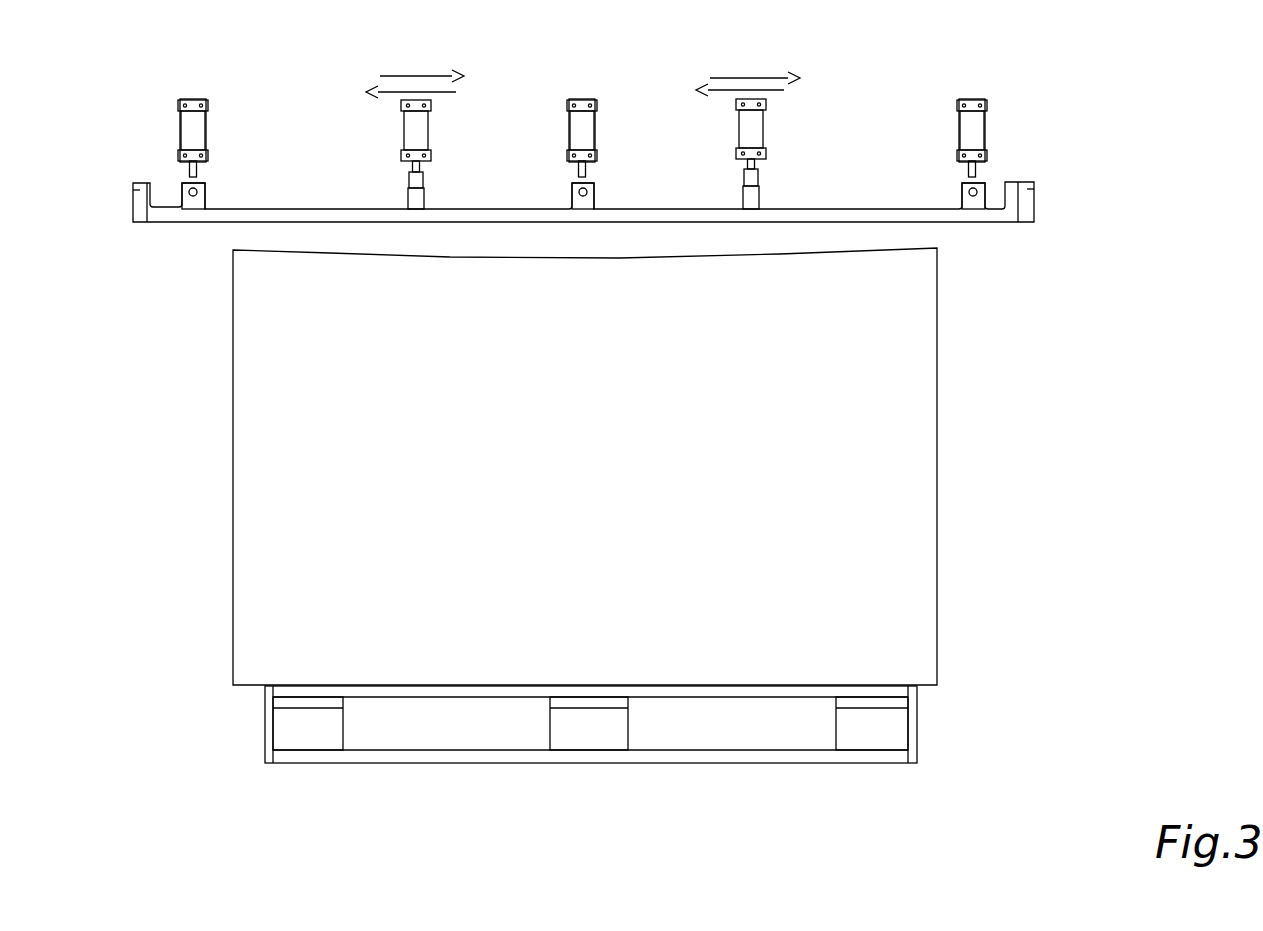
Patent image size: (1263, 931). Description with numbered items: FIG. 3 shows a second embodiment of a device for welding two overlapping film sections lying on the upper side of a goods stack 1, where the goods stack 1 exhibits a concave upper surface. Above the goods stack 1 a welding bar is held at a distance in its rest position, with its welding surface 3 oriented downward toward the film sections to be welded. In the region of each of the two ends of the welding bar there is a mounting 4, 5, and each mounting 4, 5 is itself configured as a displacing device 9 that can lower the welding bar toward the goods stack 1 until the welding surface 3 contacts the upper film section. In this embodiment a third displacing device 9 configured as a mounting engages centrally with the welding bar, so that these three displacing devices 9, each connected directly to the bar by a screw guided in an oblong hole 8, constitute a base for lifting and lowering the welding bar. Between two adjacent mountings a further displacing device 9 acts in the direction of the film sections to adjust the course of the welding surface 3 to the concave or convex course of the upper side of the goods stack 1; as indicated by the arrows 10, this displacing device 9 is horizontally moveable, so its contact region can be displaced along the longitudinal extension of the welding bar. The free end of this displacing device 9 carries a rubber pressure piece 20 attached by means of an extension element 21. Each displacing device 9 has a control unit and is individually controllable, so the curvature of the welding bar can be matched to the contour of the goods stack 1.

The goods stack 1 is at (615, 470).
The welding surface 3 is at (953, 222).
The mounting 4 is at (217, 150).
The mounting 5 is at (1010, 125).
The oblong hole 8 is at (192, 195).
The displacing device 9 is at (207, 127).
The arrows 10 is at (418, 93).
The rubber pressure piece 20 is at (432, 196).
The extension element 21 is at (427, 177).